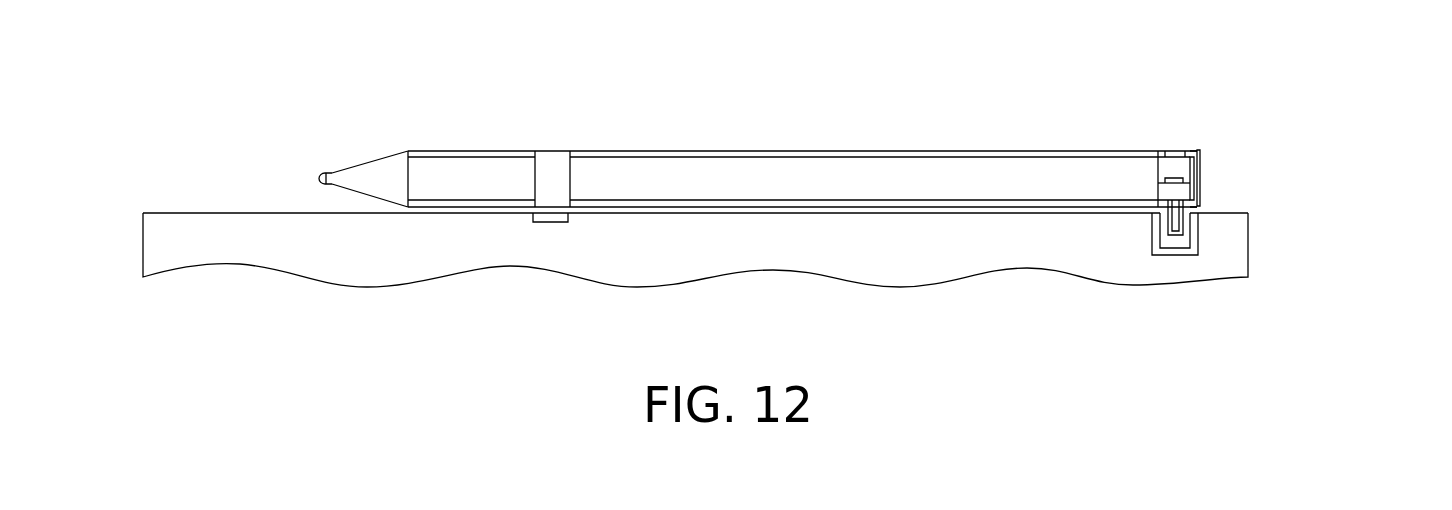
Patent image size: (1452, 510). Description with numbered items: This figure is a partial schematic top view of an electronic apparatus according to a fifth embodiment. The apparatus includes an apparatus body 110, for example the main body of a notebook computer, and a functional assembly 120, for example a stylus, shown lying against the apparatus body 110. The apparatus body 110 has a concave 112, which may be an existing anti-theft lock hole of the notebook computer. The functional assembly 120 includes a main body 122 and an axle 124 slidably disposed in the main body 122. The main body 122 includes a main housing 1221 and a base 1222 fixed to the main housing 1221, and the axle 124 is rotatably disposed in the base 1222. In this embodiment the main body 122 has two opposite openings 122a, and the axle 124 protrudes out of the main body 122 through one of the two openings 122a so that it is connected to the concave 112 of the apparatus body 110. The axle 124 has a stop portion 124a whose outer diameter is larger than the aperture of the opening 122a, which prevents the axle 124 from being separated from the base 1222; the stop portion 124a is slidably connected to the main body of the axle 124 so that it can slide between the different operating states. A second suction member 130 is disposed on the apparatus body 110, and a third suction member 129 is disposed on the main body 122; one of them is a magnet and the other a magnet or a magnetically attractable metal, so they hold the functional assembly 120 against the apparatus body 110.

The apparatus body 110 is at (452, 258).
The concave 112 is at (1192, 233).
The functional assembly 120 is at (739, 136).
The main body 122 is at (1307, 161).
The main housing 1221 is at (1202, 164).
The base 1222 is at (1203, 182).
The opening 122a is at (1196, 151).
The axle 124 is at (1177, 226).
The stop portion 124a is at (1172, 192).
The third suction member 129 is at (550, 168).
The second suction member 130 is at (550, 217).